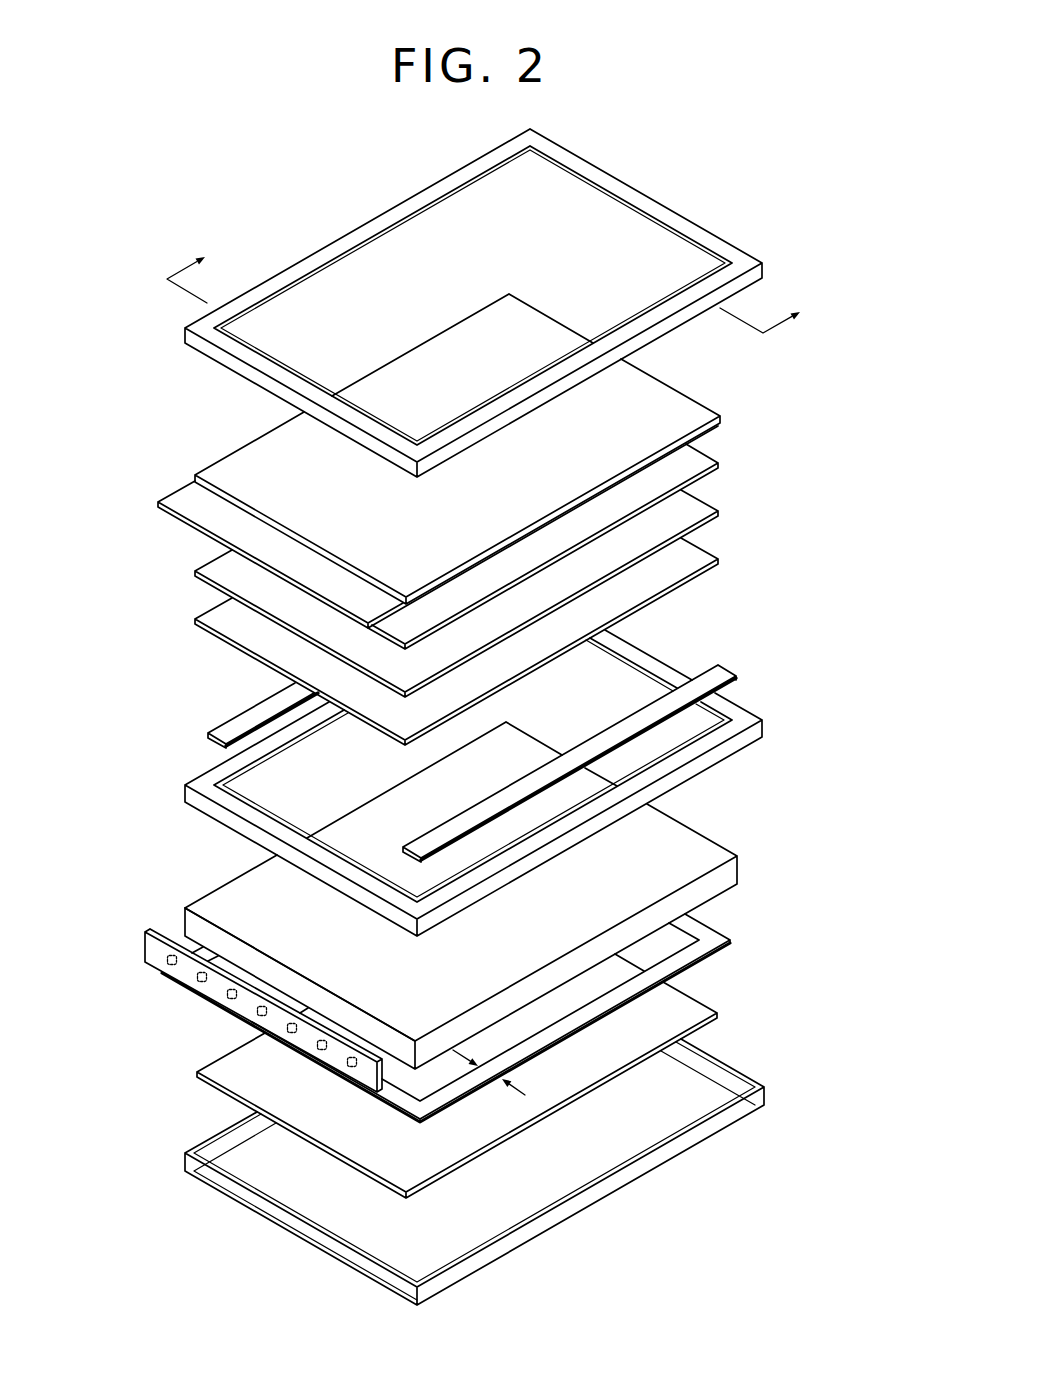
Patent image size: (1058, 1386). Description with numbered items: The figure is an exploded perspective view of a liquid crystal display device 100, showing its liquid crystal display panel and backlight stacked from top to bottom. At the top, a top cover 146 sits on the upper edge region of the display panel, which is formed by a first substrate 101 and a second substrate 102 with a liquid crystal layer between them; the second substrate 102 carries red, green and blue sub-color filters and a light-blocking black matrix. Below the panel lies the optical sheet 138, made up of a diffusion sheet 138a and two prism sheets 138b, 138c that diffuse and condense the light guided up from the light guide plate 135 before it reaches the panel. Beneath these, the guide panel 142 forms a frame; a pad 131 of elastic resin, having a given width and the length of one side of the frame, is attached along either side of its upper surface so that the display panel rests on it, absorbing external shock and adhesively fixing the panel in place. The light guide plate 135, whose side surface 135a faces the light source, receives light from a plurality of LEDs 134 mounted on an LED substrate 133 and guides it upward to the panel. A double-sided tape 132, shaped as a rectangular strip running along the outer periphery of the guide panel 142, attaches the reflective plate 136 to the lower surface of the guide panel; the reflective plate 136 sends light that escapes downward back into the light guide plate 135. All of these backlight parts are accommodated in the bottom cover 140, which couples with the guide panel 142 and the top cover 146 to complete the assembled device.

The display apparatus 100 is at (266, 184).
The top cover 146 is at (764, 262).
The second substrate 102 is at (249, 448).
The first substrate 101 is at (192, 498).
The optical sheet 138 is at (528, 589).
The diffusion sheet 138a is at (502, 640).
The prism sheet 138b is at (714, 509).
The prism sheet 138c is at (714, 462).
The pad 131 is at (722, 671).
The guide panel 142 is at (190, 794).
The light guide plate 135 is at (188, 918).
The light incident surface of light guide plate 135a is at (415, 1044).
The LED substrate 133 is at (150, 950).
The LEDs 134 is at (165, 977).
The double-sided tape 132 is at (680, 964).
The reflective plate 136 is at (222, 1081).
The bottom cover 140 is at (218, 1183).